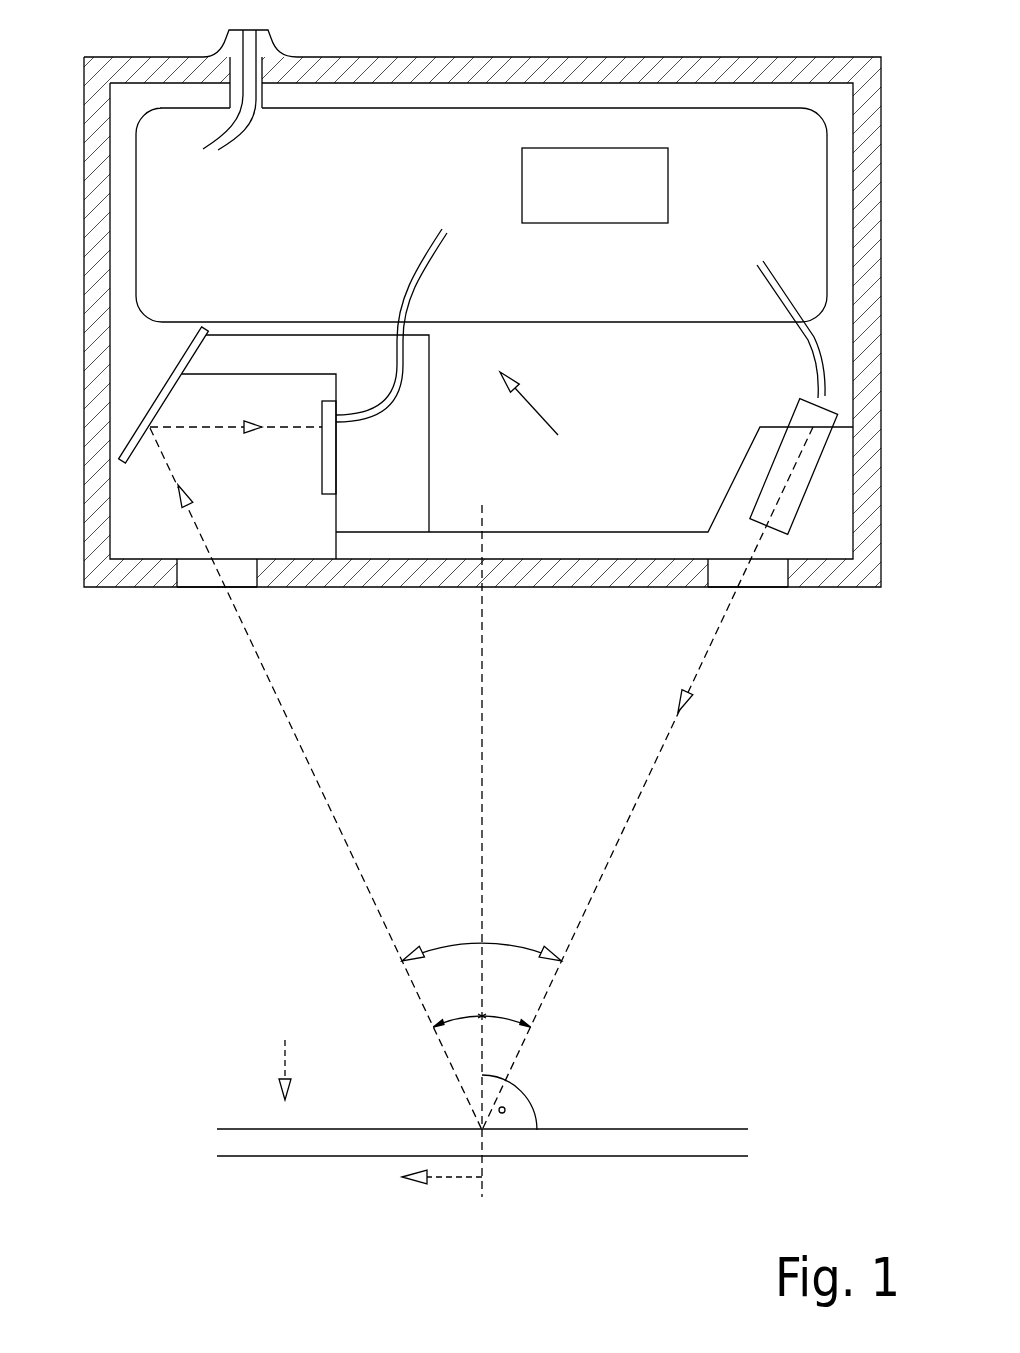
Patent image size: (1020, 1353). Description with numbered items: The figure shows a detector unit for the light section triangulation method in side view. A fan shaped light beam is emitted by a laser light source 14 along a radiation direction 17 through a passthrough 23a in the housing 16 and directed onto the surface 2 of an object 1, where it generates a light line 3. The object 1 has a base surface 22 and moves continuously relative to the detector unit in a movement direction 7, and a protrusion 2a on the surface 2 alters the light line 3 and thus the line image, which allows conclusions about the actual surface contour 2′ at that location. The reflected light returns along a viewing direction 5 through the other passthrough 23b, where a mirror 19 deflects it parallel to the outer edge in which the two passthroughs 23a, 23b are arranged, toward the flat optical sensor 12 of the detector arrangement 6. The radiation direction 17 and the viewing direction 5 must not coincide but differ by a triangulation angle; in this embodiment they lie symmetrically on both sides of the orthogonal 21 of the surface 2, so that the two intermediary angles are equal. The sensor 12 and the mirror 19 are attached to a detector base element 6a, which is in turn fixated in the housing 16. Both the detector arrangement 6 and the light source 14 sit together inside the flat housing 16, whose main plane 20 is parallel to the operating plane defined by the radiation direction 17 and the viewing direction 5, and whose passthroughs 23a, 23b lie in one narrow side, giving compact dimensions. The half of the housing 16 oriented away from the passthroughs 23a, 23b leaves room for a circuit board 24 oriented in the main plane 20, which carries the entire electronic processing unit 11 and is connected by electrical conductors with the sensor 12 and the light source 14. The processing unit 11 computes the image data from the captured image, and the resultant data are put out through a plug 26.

The object 1 is at (444, 1132).
The surface 2 is at (682, 1129).
The protrusion 2a is at (237, 1129).
The surface contour 2′ is at (289, 1057).
The light line 3 is at (482, 1130).
The viewing direction 5 is at (298, 732).
The detector arrangement 6 is at (535, 415).
The detector base element 6a is at (517, 447).
The movement direction 7 is at (445, 1182).
The electronic processing unit 11 is at (595, 185).
The optical sensor 12 is at (330, 465).
The laser light source 14 is at (800, 473).
The housing 16 is at (97, 375).
The radiation direction 17 is at (640, 807).
The mirror 19 is at (128, 442).
The main plane 20 is at (920, 543).
The orthogonal 21 is at (486, 738).
The base surface 22 is at (223, 1156).
The passthrough 23a is at (768, 572).
The passthrough 23b is at (205, 573).
The circuit board 24 is at (138, 255).
The plug 26 is at (277, 50).